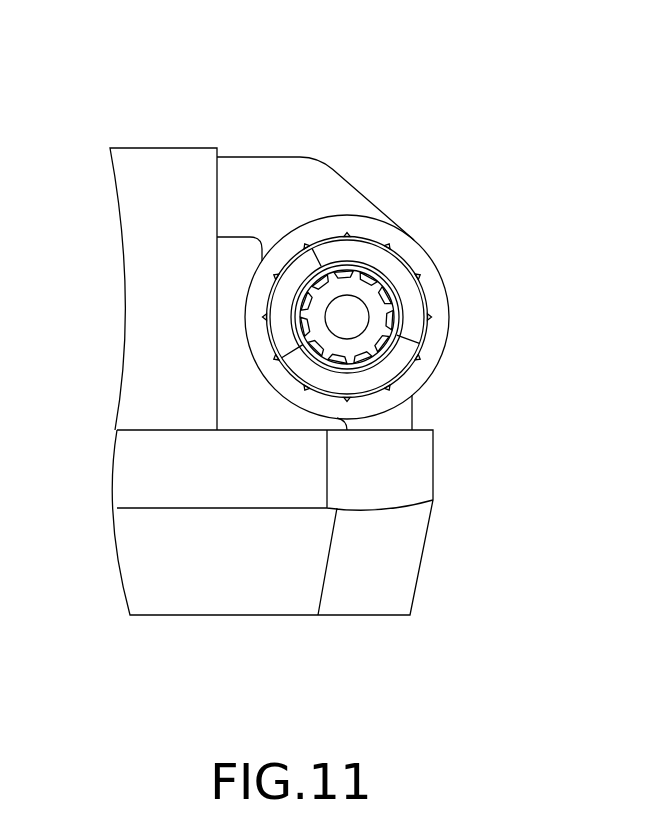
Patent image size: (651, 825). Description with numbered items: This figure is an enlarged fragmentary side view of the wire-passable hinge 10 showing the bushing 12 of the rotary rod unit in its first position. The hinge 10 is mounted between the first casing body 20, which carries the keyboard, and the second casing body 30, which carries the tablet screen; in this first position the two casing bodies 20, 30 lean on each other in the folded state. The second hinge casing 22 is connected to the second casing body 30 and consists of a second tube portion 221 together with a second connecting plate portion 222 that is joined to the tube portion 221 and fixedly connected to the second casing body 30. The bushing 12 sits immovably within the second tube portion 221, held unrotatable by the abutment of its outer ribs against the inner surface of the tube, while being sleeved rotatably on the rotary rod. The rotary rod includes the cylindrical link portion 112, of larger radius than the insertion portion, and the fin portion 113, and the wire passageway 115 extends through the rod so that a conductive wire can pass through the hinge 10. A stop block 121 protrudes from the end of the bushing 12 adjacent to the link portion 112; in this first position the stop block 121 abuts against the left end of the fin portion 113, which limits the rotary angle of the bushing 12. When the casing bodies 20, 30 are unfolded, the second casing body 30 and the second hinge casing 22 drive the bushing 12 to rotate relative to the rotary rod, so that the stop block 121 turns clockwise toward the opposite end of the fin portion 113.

The wire-passable hinge 10 is at (485, 130).
The bushing 12 is at (234, 260).
The link portion 112 is at (319, 305).
The fin portion 113 is at (322, 373).
The wire passageway 115 is at (340, 324).
The stop block 121 is at (294, 277).
The first casing body 20 is at (205, 615).
The second hinge casing 22 is at (398, 251).
The second tube portion 221 is at (418, 258).
The second connecting plate portion 222 is at (273, 155).
The second casing body 30 is at (163, 147).